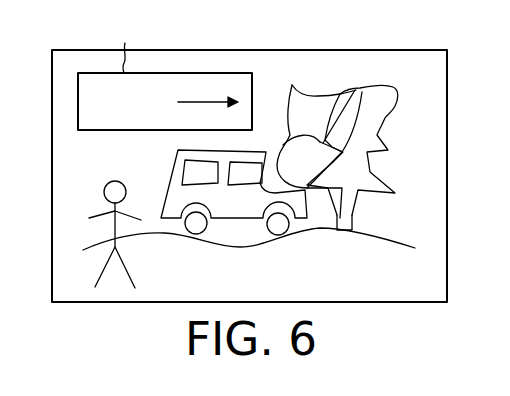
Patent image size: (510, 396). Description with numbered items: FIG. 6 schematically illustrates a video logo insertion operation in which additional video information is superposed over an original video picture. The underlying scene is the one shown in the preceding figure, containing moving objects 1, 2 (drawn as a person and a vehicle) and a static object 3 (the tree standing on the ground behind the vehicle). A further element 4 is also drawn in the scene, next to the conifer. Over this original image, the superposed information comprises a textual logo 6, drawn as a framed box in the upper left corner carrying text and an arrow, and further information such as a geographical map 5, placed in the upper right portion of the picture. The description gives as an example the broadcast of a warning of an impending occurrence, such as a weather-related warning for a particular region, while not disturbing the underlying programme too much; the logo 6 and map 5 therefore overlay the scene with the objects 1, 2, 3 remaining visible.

The moving object 1 is at (122, 266).
The moving object 2 is at (258, 228).
The static object 3 is at (360, 228).
The deciduous tree 4 is at (316, 94).
The geographical map 5 is at (396, 100).
The textual logo 6 is at (78, 90).